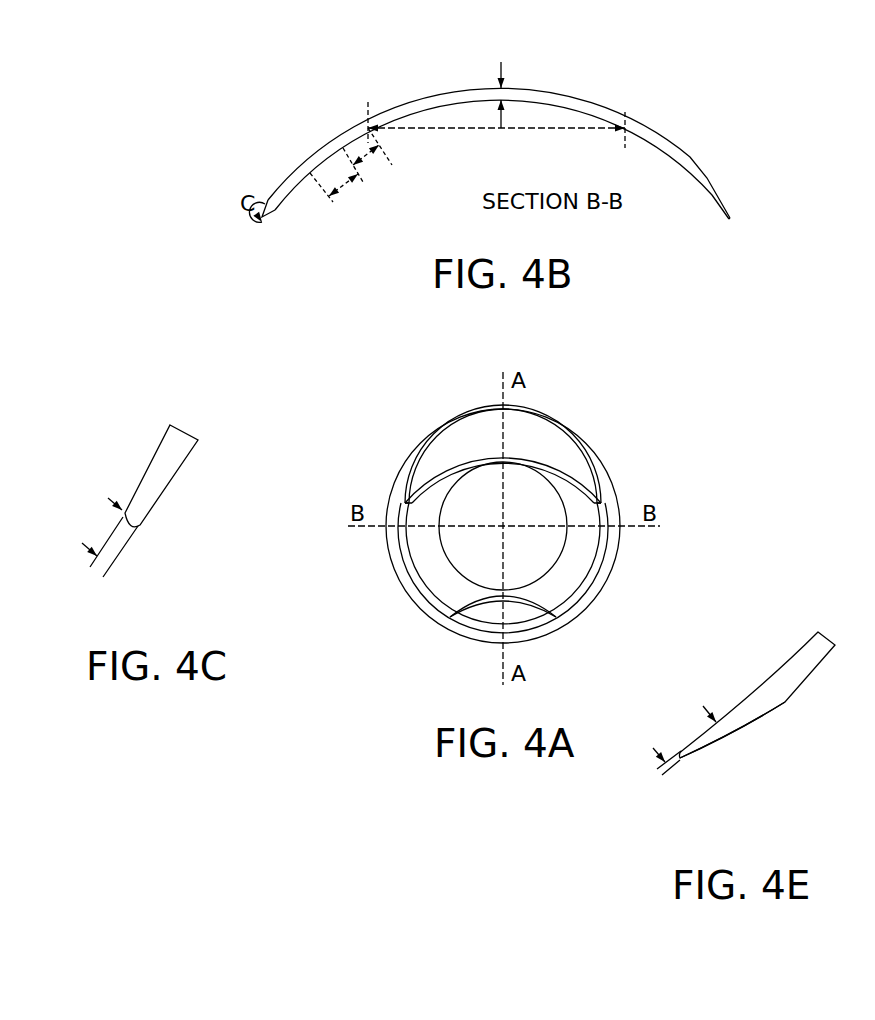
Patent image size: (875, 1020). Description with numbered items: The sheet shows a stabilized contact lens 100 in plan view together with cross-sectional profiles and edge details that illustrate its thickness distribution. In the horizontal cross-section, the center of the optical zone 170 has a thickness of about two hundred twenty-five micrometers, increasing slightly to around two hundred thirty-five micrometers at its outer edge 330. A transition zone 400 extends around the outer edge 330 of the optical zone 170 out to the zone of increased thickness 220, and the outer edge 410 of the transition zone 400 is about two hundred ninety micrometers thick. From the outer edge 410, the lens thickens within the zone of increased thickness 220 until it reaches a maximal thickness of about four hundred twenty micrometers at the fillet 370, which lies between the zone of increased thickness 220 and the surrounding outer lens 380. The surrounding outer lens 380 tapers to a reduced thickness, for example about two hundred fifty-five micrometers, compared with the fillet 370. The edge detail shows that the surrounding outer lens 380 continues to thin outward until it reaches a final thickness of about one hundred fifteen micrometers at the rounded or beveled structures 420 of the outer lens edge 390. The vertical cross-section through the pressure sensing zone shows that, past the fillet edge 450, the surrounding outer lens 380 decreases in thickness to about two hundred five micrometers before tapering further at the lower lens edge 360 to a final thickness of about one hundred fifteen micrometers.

In FIG. 4A, the intraocular lens 100 is at (615, 410).
In FIG. 4B, the optical zone 170 is at (505, 132).
In FIG. 4B, the zone of increased thickness 220 is at (338, 186).
In FIG. 4B, the outer edge 330 is at (365, 112).
In FIG. 4E, the lower lens edge 360 is at (672, 768).
In FIG. 4B, the fillet 370 is at (456, 153).
In FIG. 4B, the surrounding outer lens 380 is at (292, 157).
In FIG. 4E, the surrounding outer lens 380 is at (735, 731).
In FIG. 4C, the outer lens edge 390 is at (111, 567).
In FIG. 4B, the transition zone 400 is at (379, 150).
In FIG. 4B, the outer edge of the transition zone 410 is at (333, 128).
In FIG. 4C, the rounded or beveled structures 420 is at (143, 525).
In FIG. 4E, the fillet edge 450 is at (785, 702).